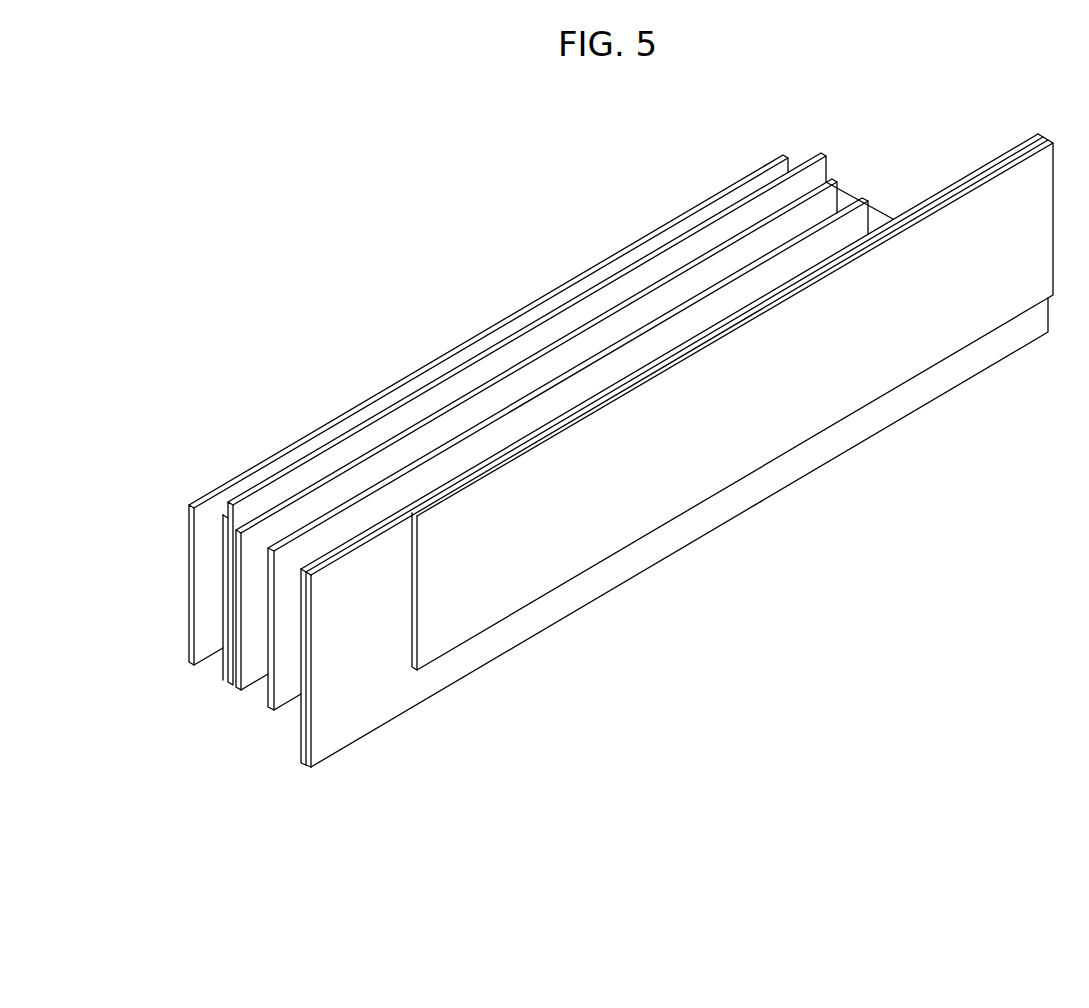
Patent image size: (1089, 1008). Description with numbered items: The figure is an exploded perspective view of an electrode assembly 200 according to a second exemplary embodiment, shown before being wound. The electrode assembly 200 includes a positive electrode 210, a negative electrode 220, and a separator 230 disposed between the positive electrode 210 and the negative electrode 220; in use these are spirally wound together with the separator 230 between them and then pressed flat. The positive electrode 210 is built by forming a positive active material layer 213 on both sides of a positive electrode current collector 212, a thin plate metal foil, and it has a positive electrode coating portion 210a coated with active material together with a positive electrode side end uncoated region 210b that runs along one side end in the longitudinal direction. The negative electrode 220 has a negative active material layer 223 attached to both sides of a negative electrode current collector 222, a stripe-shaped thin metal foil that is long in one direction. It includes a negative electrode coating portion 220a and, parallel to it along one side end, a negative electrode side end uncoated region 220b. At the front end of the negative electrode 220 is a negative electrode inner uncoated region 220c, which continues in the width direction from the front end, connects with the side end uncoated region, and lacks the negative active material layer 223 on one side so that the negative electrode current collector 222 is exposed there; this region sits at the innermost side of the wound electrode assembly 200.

The electrode assembly 200 is at (510, 142).
The positive electrode 210 is at (808, 154).
The positive electrode coating portion 210a is at (485, 402).
The positive electrode side end uncoated region 210b is at (570, 318).
The positive electrode current collector 212 is at (228, 668).
The positive active material layer 213 is at (225, 612).
The negative electrode 220 is at (921, 200).
The negative electrode coating portion 220a is at (730, 453).
The negative electrode side end uncoated region 220b is at (627, 565).
The negative electrode inner uncoated region 220c is at (355, 690).
The negative electrode current collector 222 is at (782, 295).
The negative active material layer 223 is at (690, 353).
The separator 230 is at (338, 417).